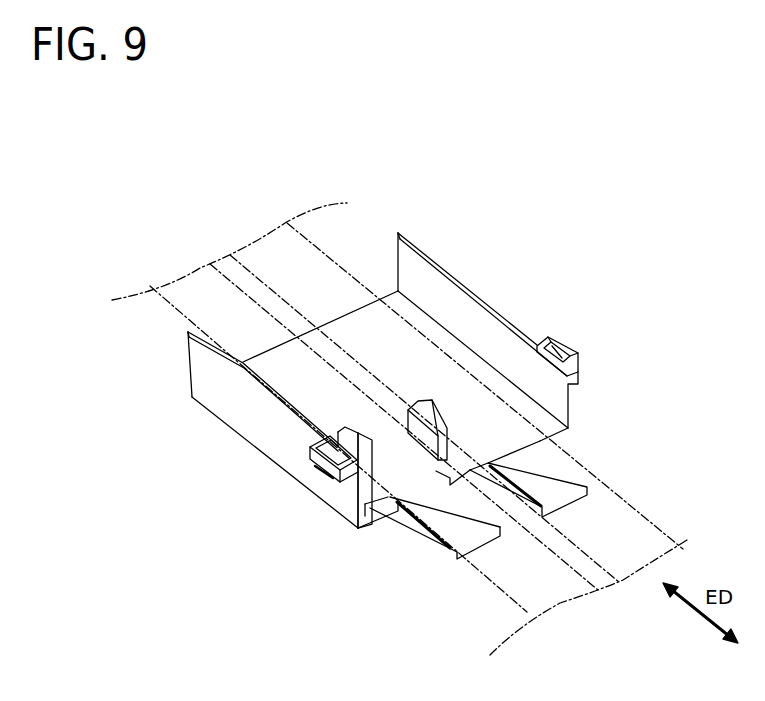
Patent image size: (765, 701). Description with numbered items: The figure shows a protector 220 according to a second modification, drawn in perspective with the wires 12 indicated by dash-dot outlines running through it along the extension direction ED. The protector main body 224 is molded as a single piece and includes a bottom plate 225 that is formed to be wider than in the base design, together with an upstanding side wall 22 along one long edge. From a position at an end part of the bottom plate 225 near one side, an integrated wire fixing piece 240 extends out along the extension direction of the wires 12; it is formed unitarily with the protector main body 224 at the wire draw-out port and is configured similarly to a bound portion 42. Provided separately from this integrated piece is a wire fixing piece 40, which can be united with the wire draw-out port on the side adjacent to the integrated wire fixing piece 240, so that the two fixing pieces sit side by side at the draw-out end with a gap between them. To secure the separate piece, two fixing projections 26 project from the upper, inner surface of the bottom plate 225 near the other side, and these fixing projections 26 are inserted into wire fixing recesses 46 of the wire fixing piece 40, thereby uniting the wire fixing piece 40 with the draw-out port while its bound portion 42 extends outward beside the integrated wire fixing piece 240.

The wires 12 is at (625, 502).
The protector 220 is at (387, 222).
The side wall 22 is at (488, 326).
The protector main body 224 is at (437, 258).
The bottom plate 225 is at (480, 360).
The integrated wire fixing piece 240 is at (567, 462).
The fixing projections 26 is at (408, 416).
The wire fixing recesses 46 is at (423, 448).
The wire fixing piece 40 is at (435, 539).
The bound portion 42 is at (460, 525).